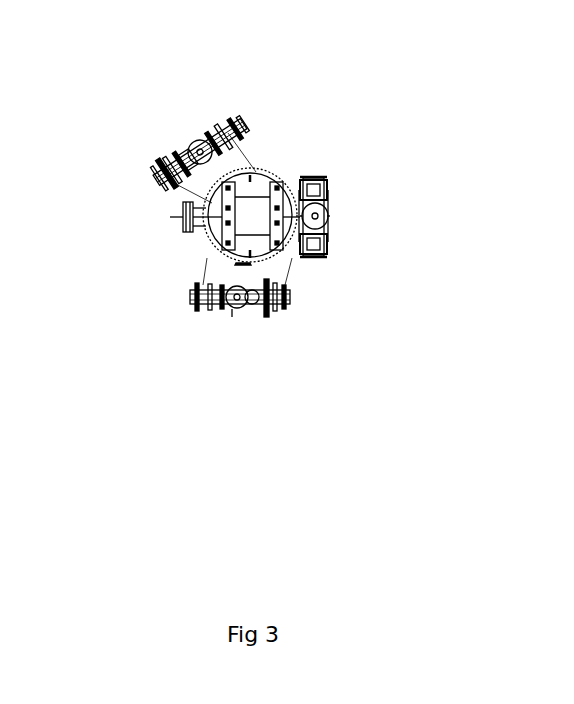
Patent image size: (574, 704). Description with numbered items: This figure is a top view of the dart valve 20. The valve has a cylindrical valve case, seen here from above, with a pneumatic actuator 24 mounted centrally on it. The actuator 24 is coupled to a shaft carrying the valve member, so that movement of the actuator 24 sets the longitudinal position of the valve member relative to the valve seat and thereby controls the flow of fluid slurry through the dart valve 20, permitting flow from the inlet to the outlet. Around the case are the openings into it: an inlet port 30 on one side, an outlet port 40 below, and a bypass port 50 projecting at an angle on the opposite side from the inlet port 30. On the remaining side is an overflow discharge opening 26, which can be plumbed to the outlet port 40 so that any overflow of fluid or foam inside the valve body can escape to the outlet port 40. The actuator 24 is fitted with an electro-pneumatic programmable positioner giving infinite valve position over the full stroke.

The dart valve 20 is at (392, 97).
The pneumatic actuator 24 is at (258, 207).
The overflow discharge opening 26 is at (180, 222).
The inlet port 30 is at (332, 205).
The outlet port 40 is at (232, 318).
The bypass port 50 is at (200, 132).